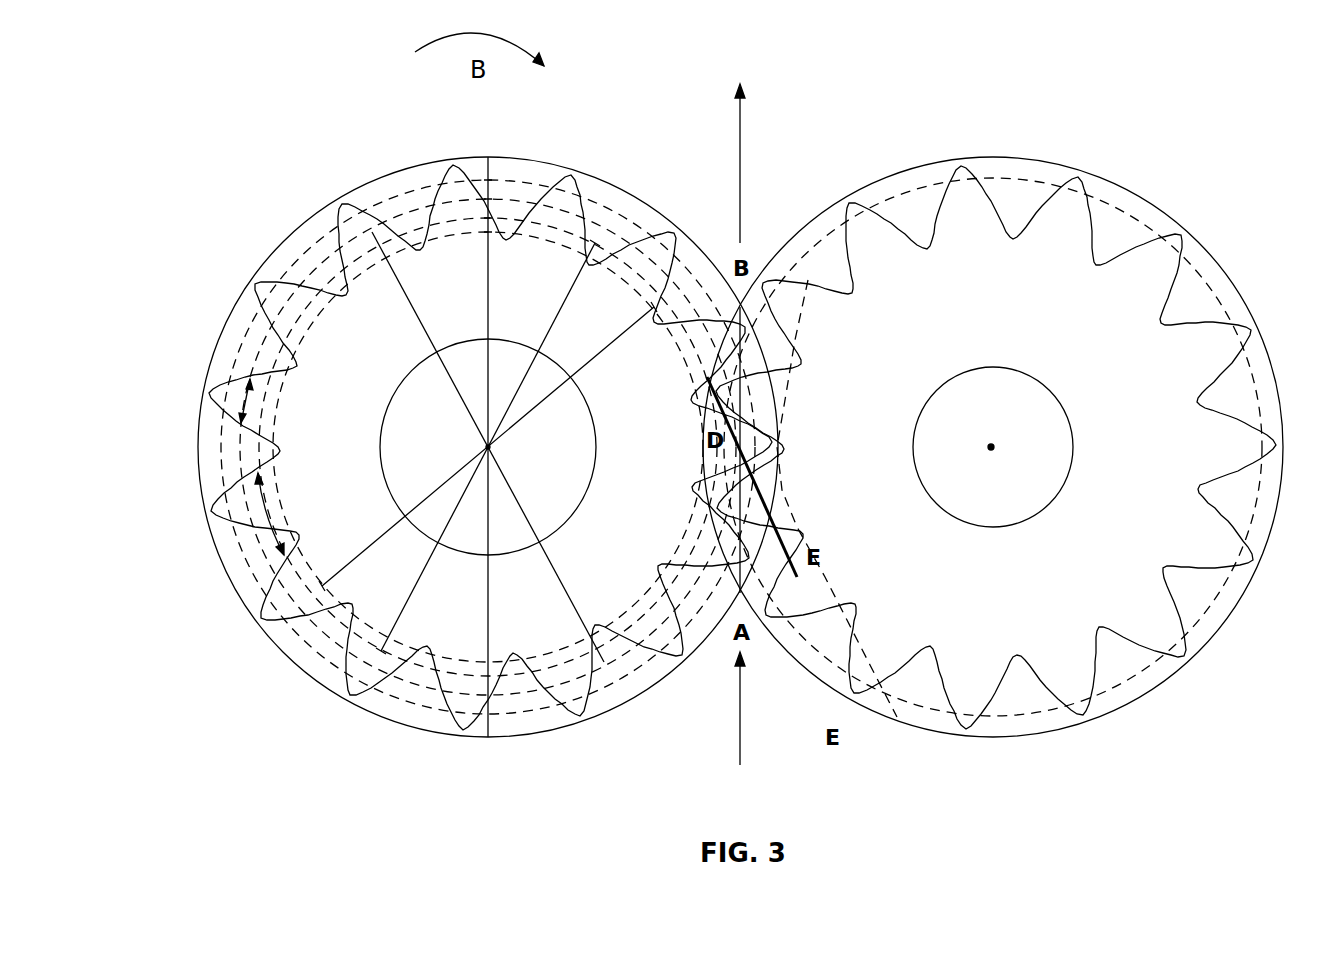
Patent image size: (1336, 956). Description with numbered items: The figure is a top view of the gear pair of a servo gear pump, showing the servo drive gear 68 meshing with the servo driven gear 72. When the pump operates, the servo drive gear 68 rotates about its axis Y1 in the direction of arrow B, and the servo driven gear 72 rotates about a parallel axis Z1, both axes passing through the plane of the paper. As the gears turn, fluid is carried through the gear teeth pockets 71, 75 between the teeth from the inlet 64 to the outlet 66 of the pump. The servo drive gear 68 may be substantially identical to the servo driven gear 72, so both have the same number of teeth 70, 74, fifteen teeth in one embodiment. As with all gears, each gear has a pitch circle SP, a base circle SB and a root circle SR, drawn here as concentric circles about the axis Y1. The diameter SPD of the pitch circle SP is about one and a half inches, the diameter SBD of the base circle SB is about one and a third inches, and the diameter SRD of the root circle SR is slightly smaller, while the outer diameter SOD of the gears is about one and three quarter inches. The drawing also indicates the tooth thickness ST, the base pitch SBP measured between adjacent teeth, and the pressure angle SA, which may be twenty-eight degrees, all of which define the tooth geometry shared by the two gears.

The inlet 64 is at (742, 744).
The outlet 66 is at (735, 150).
The servo drive gear 68 is at (522, 325).
The teeth 70 is at (665, 252).
The gear teeth pockets 71 is at (405, 712).
The servo driven gear 72 is at (932, 325).
The teeth 74 is at (970, 693).
The gear teeth pockets 75 is at (1008, 188).
The pitch circle SP is at (427, 207).
The base circle SB is at (357, 230).
The root circle SR is at (300, 297).
The tooth thickness ST is at (222, 393).
The base pitch SBP is at (284, 556).
The diameter of the base circle SBD is at (262, 588).
The outer diameter SOD is at (490, 722).
The diameter of the root circle SRD is at (505, 436).
The diameter of the pitch circle SPD is at (508, 478).
The pressure angle SA is at (765, 603).
The axis Y1 is at (468, 446).
The axis Z1 is at (973, 448).